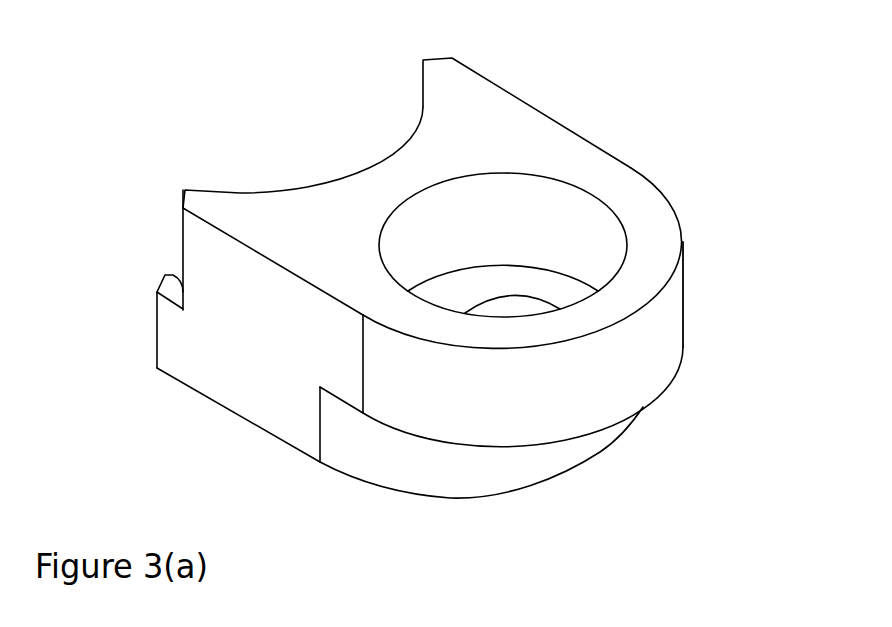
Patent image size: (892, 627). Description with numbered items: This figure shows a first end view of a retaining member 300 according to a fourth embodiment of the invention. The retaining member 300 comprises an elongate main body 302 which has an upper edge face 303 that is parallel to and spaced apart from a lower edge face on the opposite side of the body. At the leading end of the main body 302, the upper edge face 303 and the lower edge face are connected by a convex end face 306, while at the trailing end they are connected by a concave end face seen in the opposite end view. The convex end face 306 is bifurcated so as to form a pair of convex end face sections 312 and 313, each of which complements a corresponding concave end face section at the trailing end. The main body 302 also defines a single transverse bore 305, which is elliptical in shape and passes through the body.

The retaining member 300 is at (545, 96).
The elongate main body 302 is at (555, 150).
The upper edge face 303 is at (200, 368).
The transverse bore 305 is at (553, 283).
The convex end face 306 is at (683, 322).
The convex end face section 312 is at (602, 372).
The convex end face section 313 is at (388, 463).